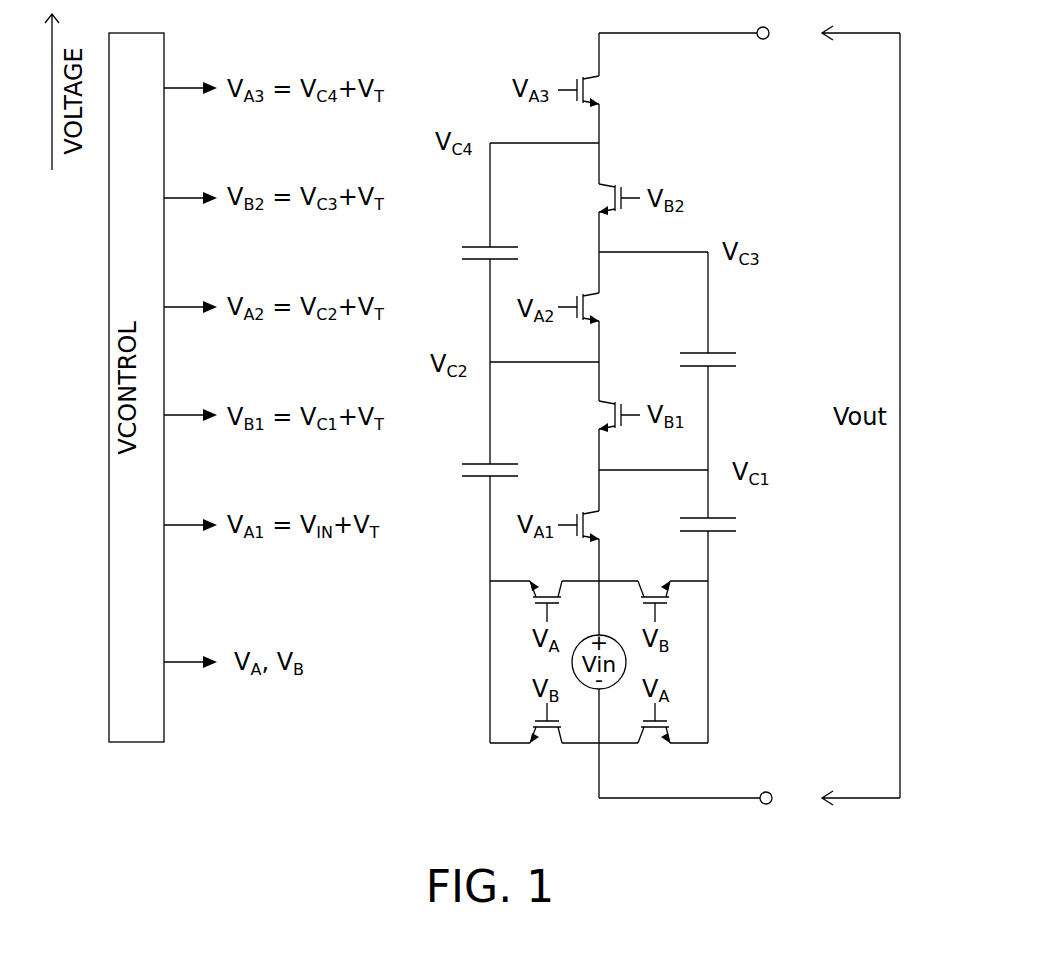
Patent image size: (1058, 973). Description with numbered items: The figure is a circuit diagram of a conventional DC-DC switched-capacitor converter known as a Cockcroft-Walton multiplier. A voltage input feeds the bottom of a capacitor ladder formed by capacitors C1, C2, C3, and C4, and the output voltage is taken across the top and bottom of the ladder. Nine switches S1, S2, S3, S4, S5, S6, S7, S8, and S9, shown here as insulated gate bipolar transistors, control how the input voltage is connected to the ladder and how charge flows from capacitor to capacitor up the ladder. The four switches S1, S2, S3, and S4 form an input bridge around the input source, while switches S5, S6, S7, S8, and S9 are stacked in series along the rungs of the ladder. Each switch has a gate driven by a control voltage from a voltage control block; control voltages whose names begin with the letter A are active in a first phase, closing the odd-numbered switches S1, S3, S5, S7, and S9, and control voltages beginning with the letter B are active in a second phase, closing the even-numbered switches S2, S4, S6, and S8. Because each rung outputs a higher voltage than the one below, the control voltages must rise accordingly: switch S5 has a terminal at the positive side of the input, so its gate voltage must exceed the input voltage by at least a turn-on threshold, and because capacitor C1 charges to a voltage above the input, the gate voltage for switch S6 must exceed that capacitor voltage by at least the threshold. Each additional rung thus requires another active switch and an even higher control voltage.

The switch S1 is at (546, 587).
The switch S2 is at (546, 741).
The switch S3 is at (654, 741).
The switch S4 is at (654, 587).
The switch S5 is at (595, 526).
The switch S6 is at (602, 416).
The switch S7 is at (595, 309).
The switch S8 is at (602, 200).
The switch S9 is at (595, 91).
The capacitor C1 is at (732, 530).
The capacitor C2 is at (470, 473).
The capacitor C3 is at (732, 366).
The capacitor C4 is at (470, 256).